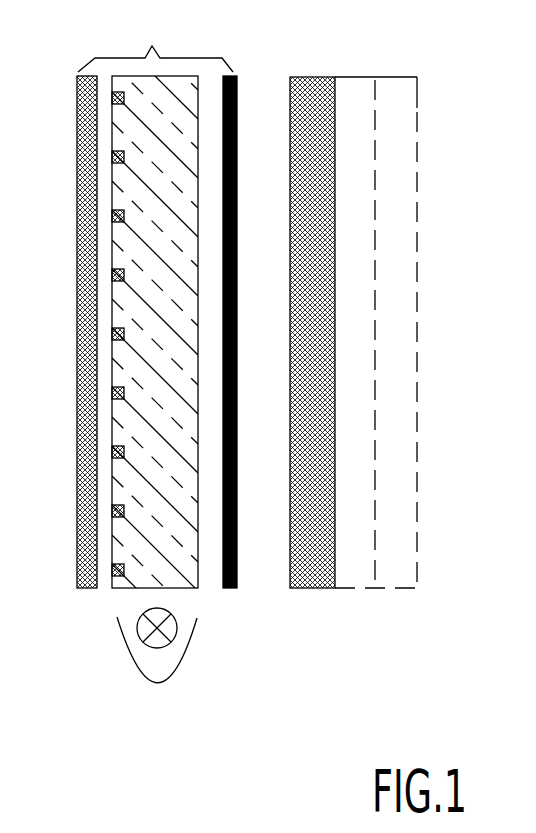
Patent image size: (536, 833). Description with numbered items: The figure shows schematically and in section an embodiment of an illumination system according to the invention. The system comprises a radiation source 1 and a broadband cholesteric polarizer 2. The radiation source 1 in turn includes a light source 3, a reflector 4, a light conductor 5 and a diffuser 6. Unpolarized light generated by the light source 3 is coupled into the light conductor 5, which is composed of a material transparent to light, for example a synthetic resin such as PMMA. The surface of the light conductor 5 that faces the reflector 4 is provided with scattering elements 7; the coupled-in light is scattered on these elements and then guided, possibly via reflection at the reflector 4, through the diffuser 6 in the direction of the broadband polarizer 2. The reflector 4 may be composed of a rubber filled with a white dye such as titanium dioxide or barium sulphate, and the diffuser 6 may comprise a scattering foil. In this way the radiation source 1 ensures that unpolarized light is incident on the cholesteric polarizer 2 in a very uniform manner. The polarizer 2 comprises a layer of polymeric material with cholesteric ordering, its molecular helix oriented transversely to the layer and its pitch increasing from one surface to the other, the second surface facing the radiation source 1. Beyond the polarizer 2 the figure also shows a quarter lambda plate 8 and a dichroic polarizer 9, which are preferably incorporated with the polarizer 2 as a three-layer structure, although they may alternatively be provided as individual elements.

The radiation source 1 is at (152, 45).
The broadband cholesteric polarizer 2 is at (318, 82).
The light source 3 is at (142, 635).
The reflector 4 is at (86, 396).
The light conductor 5 is at (202, 580).
The diffuser 6 is at (237, 587).
The scattering elements 7 is at (118, 218).
The quarter lambda plate 8 is at (355, 92).
The dichroic polarizer 9 is at (400, 92).